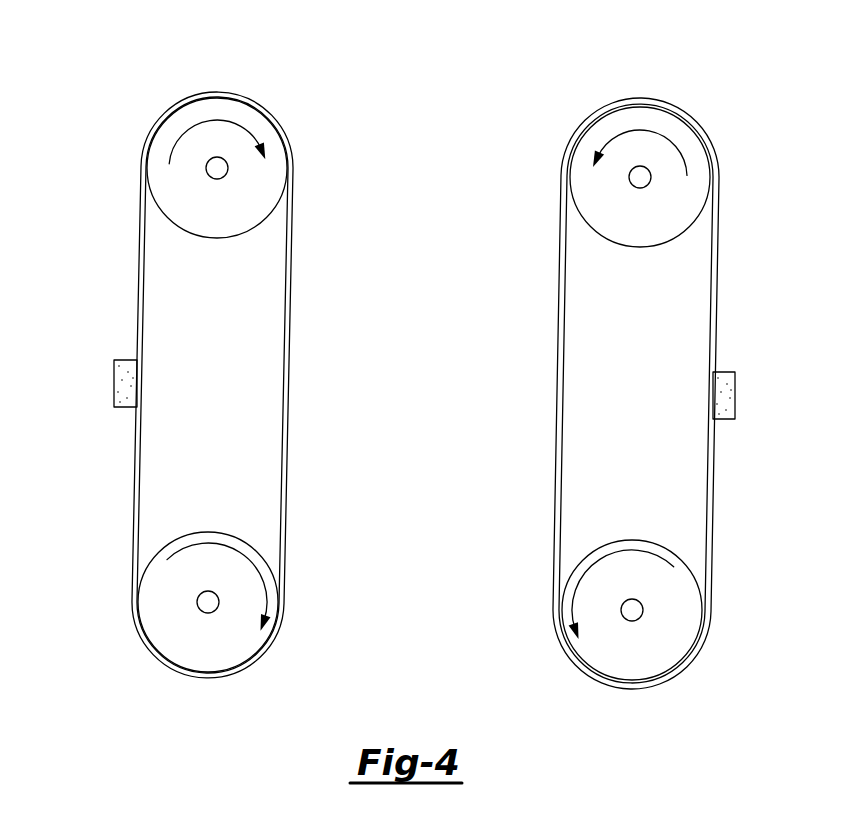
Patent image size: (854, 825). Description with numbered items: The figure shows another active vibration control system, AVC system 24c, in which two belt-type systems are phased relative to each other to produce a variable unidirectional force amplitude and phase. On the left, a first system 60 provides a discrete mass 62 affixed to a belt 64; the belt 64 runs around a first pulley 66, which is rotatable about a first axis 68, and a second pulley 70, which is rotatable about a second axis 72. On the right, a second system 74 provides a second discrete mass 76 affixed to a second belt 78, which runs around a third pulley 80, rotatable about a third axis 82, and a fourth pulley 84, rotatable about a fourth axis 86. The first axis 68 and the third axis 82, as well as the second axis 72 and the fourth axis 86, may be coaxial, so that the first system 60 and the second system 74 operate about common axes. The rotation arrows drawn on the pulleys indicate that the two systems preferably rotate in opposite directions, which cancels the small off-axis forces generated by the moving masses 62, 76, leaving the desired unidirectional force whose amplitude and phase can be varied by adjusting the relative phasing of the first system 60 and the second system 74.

The AVC system 24c is at (418, 86).
The first system 60 is at (110, 79).
The discrete mass 62 is at (114, 387).
The belt 64 is at (138, 313).
The first pulley 66 is at (160, 624).
The first axis 68 is at (207, 614).
The second pulley 70 is at (219, 235).
The second axis 72 is at (228, 170).
The second system 74 is at (749, 88).
The second discrete mass 76 is at (735, 406).
The second belt 78 is at (715, 322).
The third pulley 80 is at (680, 621).
The third axis 82 is at (630, 622).
The fourth pulley 84 is at (644, 232).
The fourth axis 86 is at (629, 177).